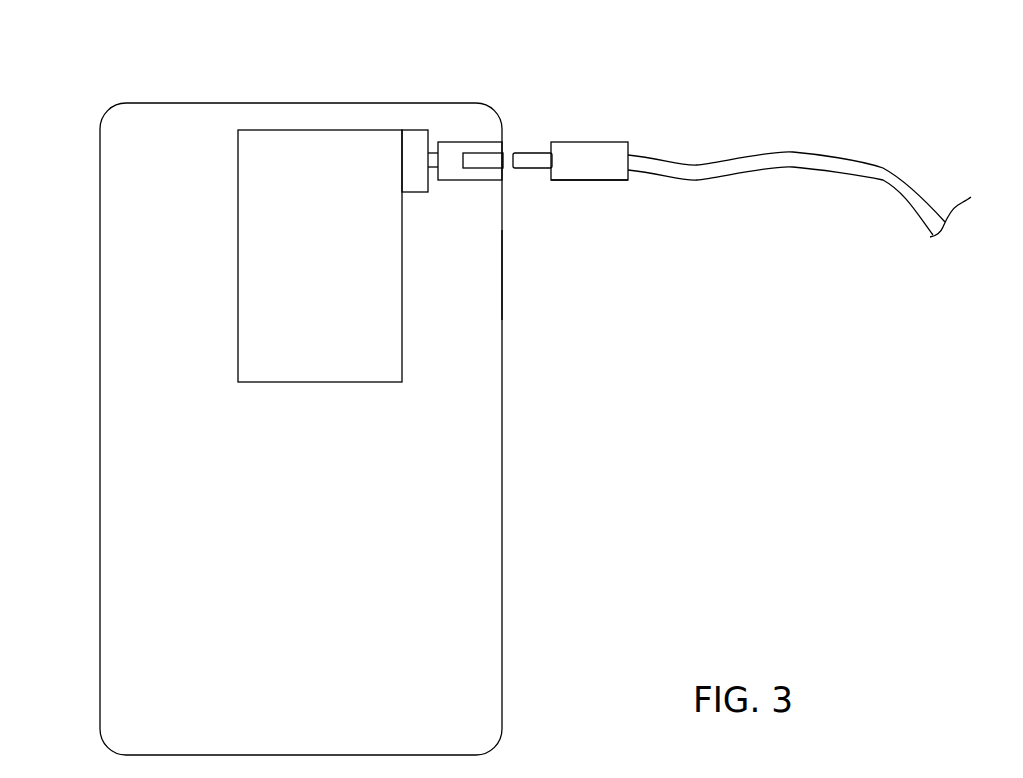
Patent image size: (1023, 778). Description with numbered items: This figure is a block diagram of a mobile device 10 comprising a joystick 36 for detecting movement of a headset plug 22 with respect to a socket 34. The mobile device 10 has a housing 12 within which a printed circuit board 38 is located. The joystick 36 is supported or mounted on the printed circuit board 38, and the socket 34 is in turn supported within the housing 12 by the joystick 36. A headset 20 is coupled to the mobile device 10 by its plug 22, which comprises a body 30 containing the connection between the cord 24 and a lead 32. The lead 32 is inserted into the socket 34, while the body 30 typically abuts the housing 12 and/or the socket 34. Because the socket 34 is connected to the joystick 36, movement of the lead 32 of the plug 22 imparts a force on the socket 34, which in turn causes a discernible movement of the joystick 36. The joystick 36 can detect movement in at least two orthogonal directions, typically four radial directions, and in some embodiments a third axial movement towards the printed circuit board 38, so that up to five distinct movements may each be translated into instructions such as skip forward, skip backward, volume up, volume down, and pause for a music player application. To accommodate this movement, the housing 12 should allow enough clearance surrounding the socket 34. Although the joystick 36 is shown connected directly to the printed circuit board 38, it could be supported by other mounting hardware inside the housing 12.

The mobile device 10 is at (503, 87).
The housing 12 is at (502, 270).
The headset 20 is at (825, 140).
The plug 22 is at (602, 187).
The cord 24 is at (885, 170).
The body 30 is at (600, 145).
The lead 32 is at (527, 155).
The socket 34 is at (490, 182).
The joystick 36 is at (413, 145).
The printed circuit board 38 is at (390, 343).